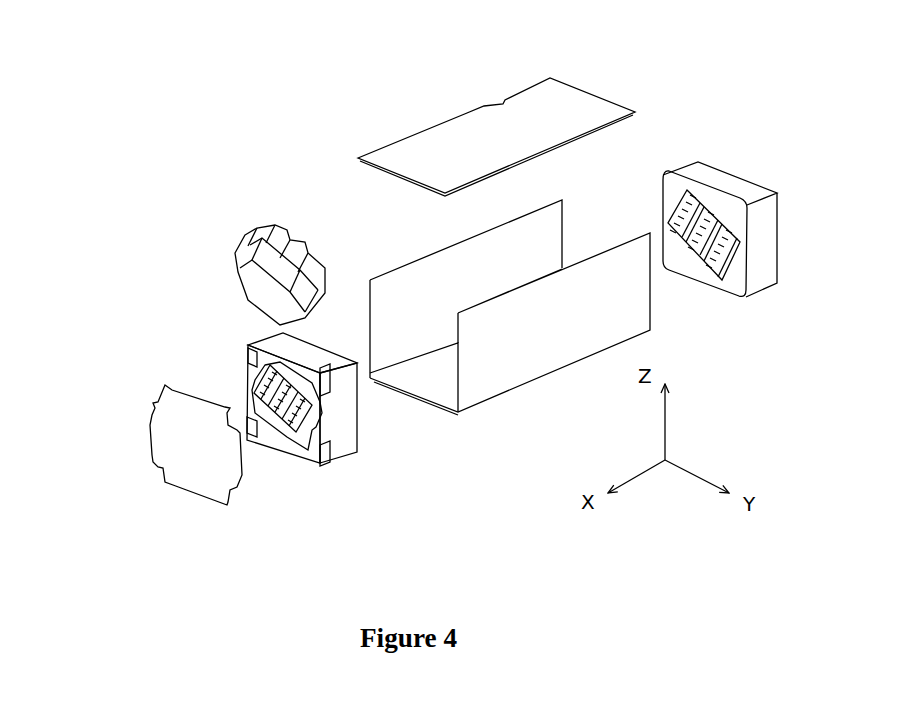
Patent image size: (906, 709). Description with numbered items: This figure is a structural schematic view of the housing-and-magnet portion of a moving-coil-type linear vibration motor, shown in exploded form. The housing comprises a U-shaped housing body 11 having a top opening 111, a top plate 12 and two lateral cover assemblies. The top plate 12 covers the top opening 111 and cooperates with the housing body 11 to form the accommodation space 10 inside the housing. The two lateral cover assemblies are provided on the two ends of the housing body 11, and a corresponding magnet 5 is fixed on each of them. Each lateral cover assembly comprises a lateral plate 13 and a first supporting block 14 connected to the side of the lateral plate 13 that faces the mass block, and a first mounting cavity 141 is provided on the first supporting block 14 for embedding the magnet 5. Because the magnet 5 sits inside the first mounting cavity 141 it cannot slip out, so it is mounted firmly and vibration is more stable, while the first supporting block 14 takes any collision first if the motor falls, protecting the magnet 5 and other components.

The magnet 5 is at (243, 237).
The accommodation space 10 is at (452, 334).
The housing body 11 is at (475, 418).
The top plate 12 is at (437, 113).
The lateral plate 13 is at (147, 418).
The first supporting block 14 is at (242, 421).
The top opening 111 is at (472, 262).
The first mounting cavity 141 is at (313, 415).